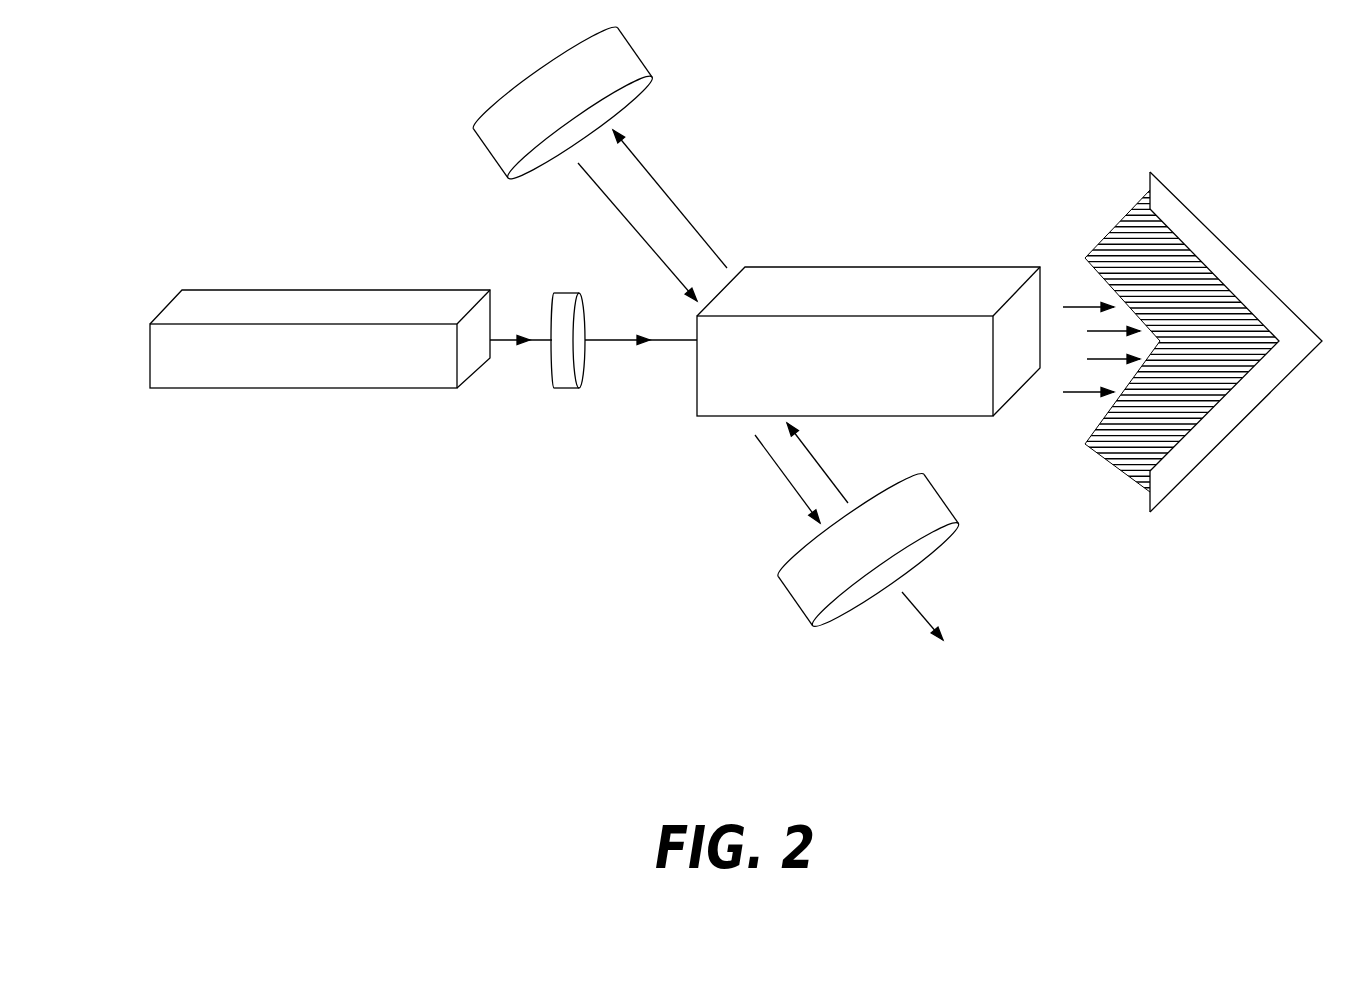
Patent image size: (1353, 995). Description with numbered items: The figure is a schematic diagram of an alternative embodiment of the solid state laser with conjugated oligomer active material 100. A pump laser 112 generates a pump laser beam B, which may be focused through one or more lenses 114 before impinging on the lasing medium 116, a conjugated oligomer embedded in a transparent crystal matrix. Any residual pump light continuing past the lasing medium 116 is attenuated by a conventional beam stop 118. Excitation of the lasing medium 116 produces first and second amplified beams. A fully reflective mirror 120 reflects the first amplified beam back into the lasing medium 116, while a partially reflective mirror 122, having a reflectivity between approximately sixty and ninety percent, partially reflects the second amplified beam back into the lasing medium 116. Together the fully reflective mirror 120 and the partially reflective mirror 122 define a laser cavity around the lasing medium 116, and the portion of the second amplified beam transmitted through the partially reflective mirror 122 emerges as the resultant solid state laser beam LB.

The solid state laser with conjugated oligomer active material 100 is at (1104, 98).
The pump laser 112 is at (303, 391).
The lens 114 is at (567, 290).
The lasing medium 116 is at (1009, 265).
The beam stop 118 is at (1215, 231).
The fully reflective mirror 120 is at (513, 86).
The partially reflective mirror 122 is at (942, 550).